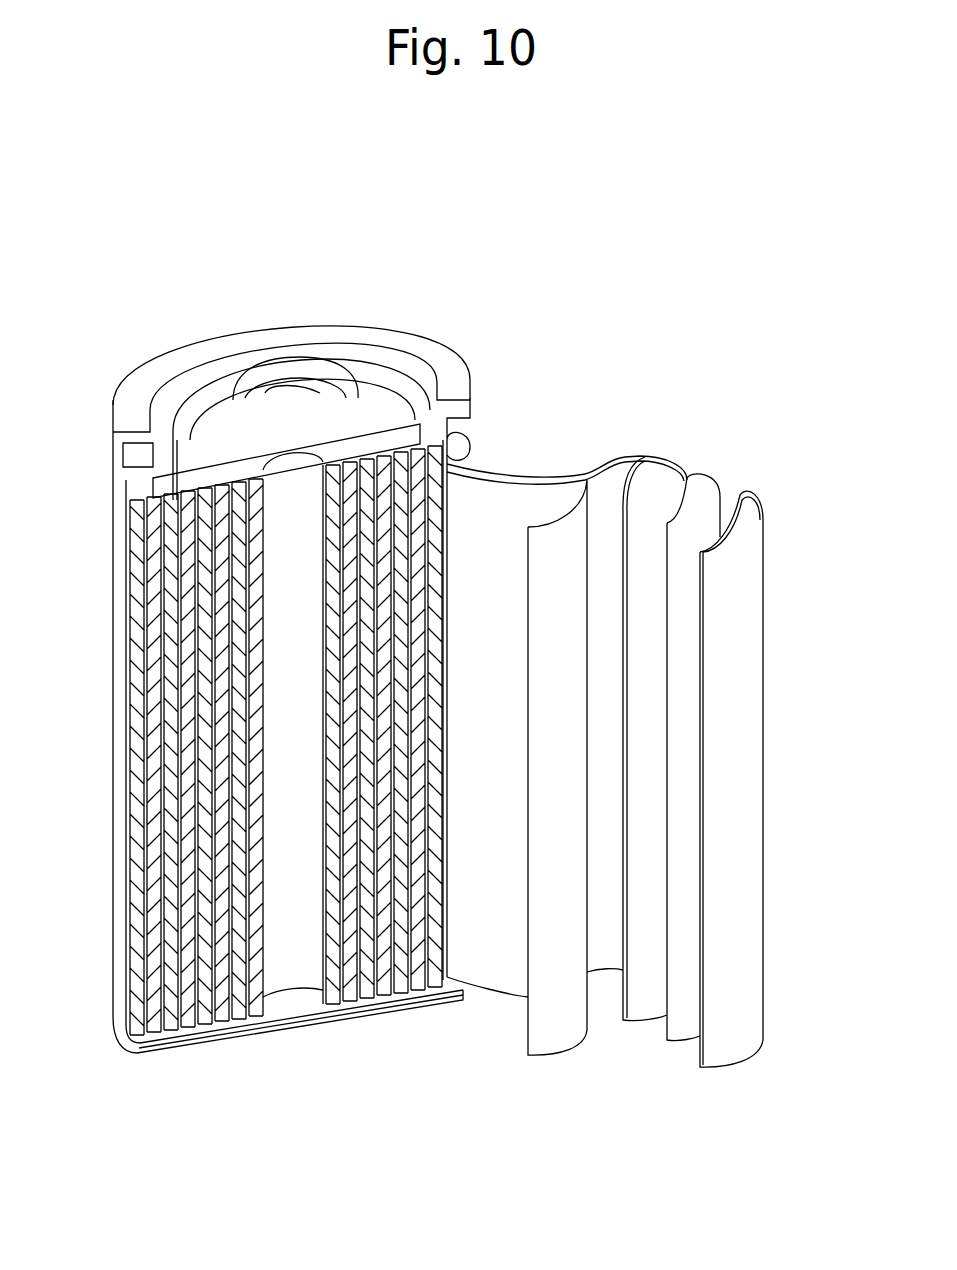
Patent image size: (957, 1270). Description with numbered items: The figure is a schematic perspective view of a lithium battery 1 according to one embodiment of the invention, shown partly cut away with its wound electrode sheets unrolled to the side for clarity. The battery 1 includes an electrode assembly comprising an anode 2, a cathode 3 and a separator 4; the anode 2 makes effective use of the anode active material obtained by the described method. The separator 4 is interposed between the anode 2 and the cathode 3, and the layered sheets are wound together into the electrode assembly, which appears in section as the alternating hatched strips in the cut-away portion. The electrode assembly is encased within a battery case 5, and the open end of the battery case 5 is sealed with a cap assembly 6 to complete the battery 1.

The battery 1 is at (742, 414).
The anode 2 is at (750, 632).
The cathode 3 is at (645, 523).
The separator 4 is at (710, 525).
The battery case 5 is at (113, 968).
The cap assembly 6 is at (308, 367).